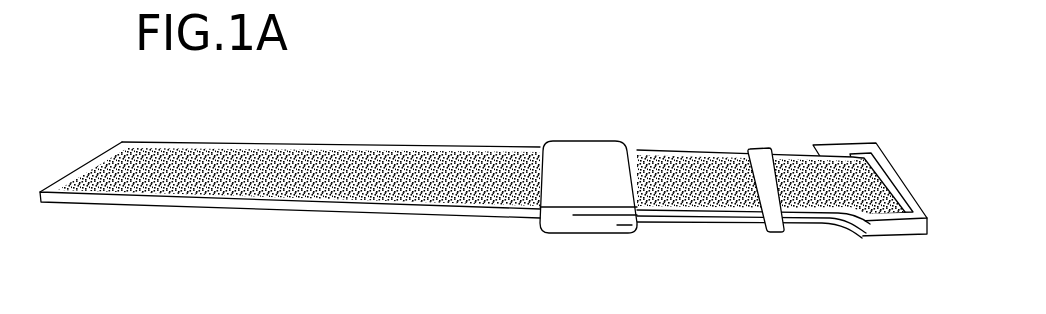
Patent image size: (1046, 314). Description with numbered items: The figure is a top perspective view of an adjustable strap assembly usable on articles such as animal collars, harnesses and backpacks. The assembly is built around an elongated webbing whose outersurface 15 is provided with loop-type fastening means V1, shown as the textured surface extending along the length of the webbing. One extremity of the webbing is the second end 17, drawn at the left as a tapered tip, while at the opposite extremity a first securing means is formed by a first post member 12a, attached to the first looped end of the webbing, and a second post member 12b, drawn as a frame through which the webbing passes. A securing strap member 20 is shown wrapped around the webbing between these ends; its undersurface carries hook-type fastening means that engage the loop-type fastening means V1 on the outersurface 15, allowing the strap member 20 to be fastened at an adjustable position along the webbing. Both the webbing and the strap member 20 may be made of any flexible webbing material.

The first post member 12a is at (845, 232).
The second post member 12b is at (884, 170).
The outersurface 15 is at (290, 173).
The second end 17 is at (72, 189).
The securing strap member 20 is at (598, 155).
The loop-type fastening means V1 is at (396, 160).